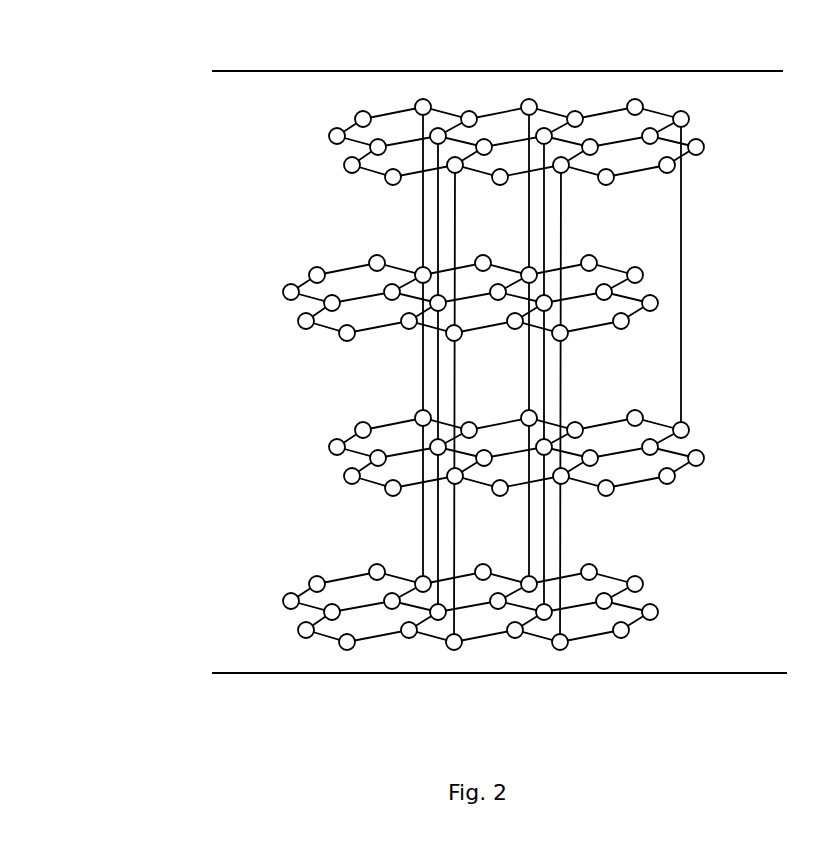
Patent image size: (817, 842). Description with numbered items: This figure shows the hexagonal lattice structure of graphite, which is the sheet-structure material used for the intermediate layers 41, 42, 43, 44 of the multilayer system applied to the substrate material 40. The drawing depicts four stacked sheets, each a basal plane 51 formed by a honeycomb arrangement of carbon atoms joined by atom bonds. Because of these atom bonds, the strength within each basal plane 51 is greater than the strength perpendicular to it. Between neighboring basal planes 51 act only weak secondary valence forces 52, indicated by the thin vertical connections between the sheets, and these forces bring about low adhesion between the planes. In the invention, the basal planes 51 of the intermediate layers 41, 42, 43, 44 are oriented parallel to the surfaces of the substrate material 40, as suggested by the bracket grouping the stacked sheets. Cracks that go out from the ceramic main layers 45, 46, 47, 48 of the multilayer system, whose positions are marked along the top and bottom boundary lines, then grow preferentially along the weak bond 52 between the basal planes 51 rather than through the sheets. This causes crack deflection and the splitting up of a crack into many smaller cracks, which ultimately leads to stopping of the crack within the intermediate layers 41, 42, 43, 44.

The substrate material 40 is at (432, 376).
The intermediate layer 41 is at (200, 673).
The intermediate layer 42 is at (363, 315).
The intermediate layer 43 is at (386, 438).
The intermediate layer 44 is at (363, 530).
The ceramic main layer 45 is at (497, 376).
The ceramic main layer 46 is at (462, 376).
The ceramic main layer 47 is at (566, 376).
The ceramic main layer 48 is at (673, 376).
The basal plane 51 is at (695, 128).
The weak secondary valence forces 52 is at (622, 225).